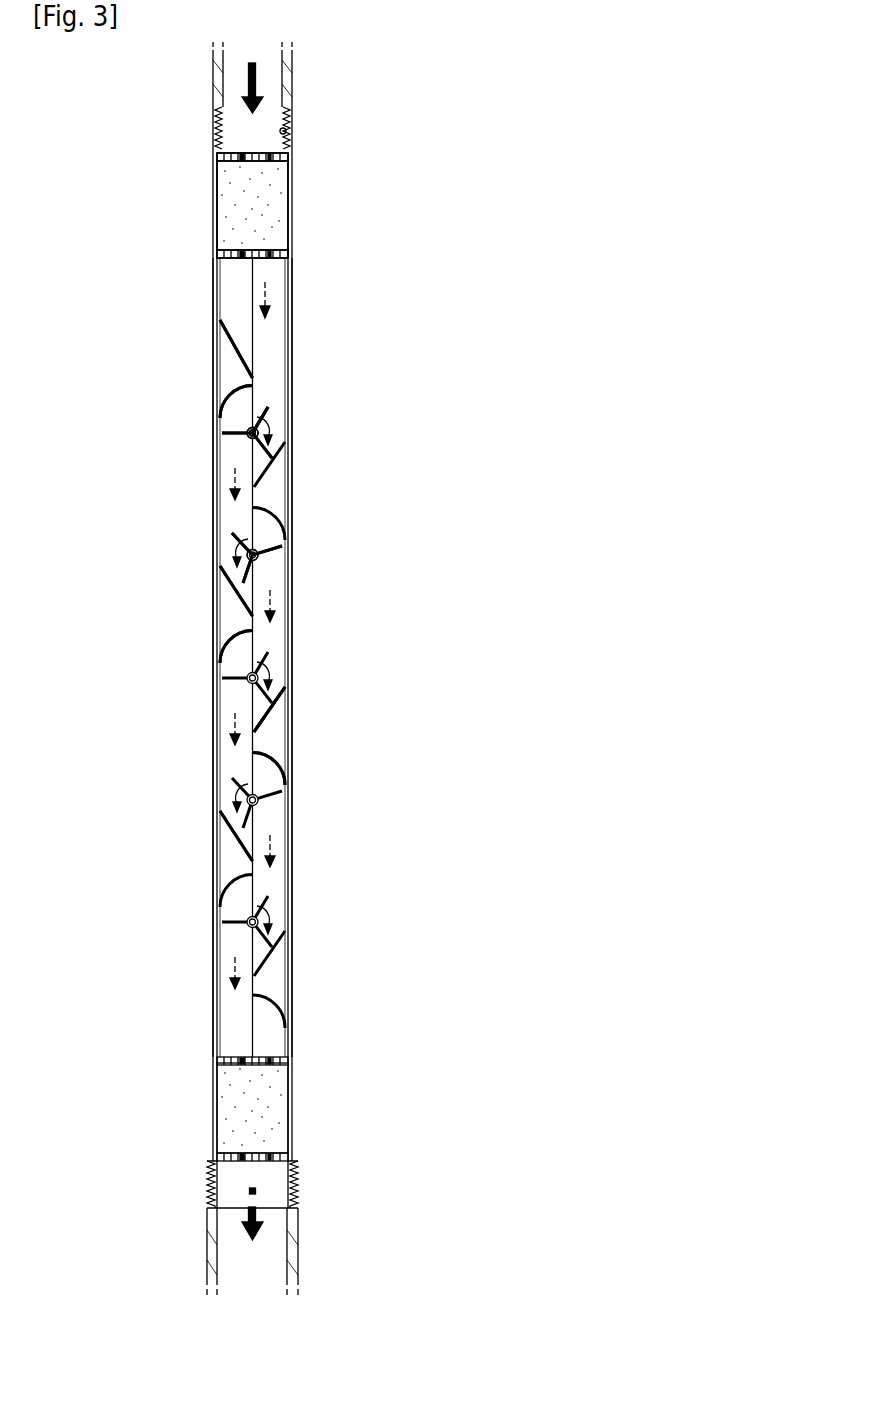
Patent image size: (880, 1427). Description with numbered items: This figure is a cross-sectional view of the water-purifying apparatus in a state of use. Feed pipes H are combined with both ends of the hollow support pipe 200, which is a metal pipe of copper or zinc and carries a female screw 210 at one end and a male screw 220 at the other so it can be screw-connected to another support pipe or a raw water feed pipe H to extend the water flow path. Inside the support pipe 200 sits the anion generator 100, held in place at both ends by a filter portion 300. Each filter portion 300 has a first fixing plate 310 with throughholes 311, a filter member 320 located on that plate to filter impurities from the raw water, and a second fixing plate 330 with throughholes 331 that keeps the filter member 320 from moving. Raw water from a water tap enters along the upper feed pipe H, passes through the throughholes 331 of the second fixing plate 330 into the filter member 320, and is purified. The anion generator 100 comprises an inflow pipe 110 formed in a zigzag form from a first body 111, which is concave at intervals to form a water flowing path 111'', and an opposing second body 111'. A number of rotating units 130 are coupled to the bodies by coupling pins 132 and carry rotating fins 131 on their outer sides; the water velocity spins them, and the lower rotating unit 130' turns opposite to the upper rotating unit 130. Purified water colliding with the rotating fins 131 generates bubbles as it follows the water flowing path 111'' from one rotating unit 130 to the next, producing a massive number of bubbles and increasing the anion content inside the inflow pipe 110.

The anion generator 100 is at (232, 859).
The inflow pipe 110 is at (232, 614).
The first body 111 is at (175, 544).
The second body 111' is at (336, 682).
The water flowing path 111'' is at (337, 807).
The rotating unit 130 is at (175, 415).
The rotating fin 131 is at (267, 410).
The coupling pin 132 is at (247, 438).
The rotating unit 130' is at (337, 566).
The support pipe 200 is at (218, 578).
The female screw 210 is at (287, 130).
The male screw 220 is at (298, 1163).
The filter portion 300 is at (238, 144).
The first fixing plate 310 is at (218, 255).
The throughhole 311 is at (258, 258).
The filter member 320 is at (268, 208).
The second fixing plate 330 is at (217, 158).
The throughhole 331 is at (257, 162).
The feed pipe H is at (300, 88).